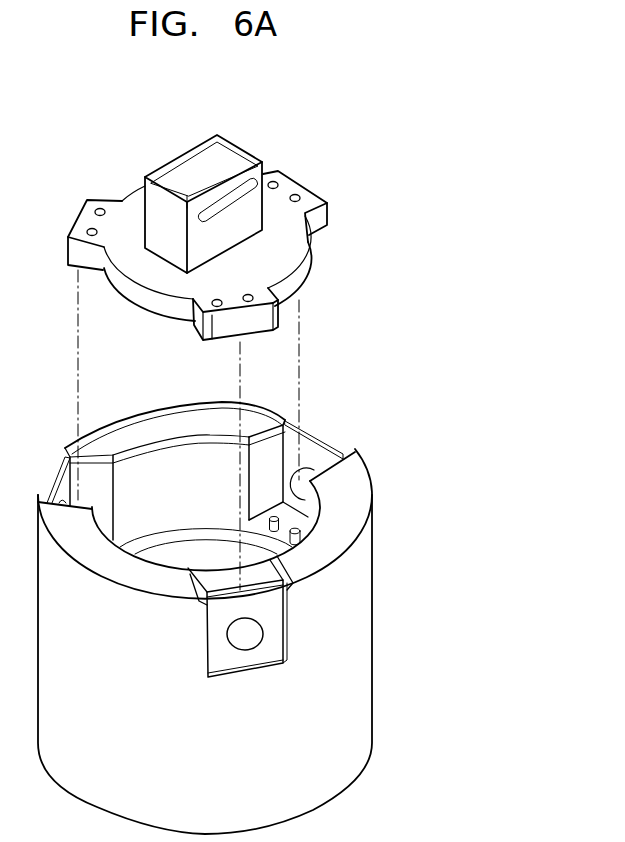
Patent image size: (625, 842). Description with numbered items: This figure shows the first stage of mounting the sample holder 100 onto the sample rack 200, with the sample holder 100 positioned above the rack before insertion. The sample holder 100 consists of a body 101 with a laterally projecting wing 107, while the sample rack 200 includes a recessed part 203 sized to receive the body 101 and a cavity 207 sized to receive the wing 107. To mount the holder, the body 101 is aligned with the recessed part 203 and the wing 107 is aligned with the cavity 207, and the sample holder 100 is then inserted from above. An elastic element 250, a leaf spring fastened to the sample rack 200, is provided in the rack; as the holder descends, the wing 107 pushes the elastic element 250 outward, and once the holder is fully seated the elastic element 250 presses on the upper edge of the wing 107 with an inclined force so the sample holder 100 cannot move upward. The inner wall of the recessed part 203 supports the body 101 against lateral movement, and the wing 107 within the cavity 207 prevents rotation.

The sample holder 100 is at (279, 244).
The body 101 is at (147, 273).
The wing 107 is at (357, 258).
The sample rack 200 is at (277, 552).
The recessed part 203 is at (145, 476).
The cavity 207 is at (268, 462).
The elastic element 250 is at (327, 450).